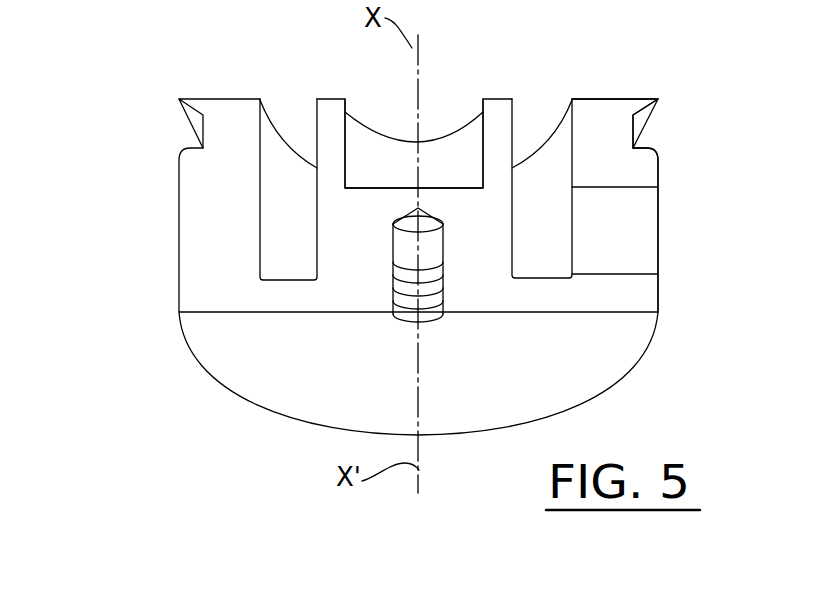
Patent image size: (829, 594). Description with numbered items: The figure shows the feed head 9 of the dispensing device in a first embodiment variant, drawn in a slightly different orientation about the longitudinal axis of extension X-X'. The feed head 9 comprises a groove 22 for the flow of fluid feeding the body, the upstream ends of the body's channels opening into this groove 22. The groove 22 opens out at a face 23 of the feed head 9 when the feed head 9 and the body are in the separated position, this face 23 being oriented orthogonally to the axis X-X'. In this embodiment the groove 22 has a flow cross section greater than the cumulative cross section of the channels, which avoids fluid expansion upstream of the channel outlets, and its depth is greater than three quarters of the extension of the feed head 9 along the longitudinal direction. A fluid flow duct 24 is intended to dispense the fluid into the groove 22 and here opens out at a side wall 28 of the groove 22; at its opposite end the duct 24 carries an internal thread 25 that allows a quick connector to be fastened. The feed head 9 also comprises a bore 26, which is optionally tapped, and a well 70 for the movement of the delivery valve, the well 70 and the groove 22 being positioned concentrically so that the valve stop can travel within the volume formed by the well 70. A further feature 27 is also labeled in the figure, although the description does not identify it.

The feed head 9 is at (135, 338).
The groove 22 is at (288, 140).
The face 23 is at (597, 93).
The fluid flow duct 24 is at (630, 226).
The internal thread 25 is at (649, 258).
The bore 26 is at (445, 268).
The left slot 27 is at (289, 276).
The side wall 28 is at (562, 150).
The well 70 is at (421, 138).